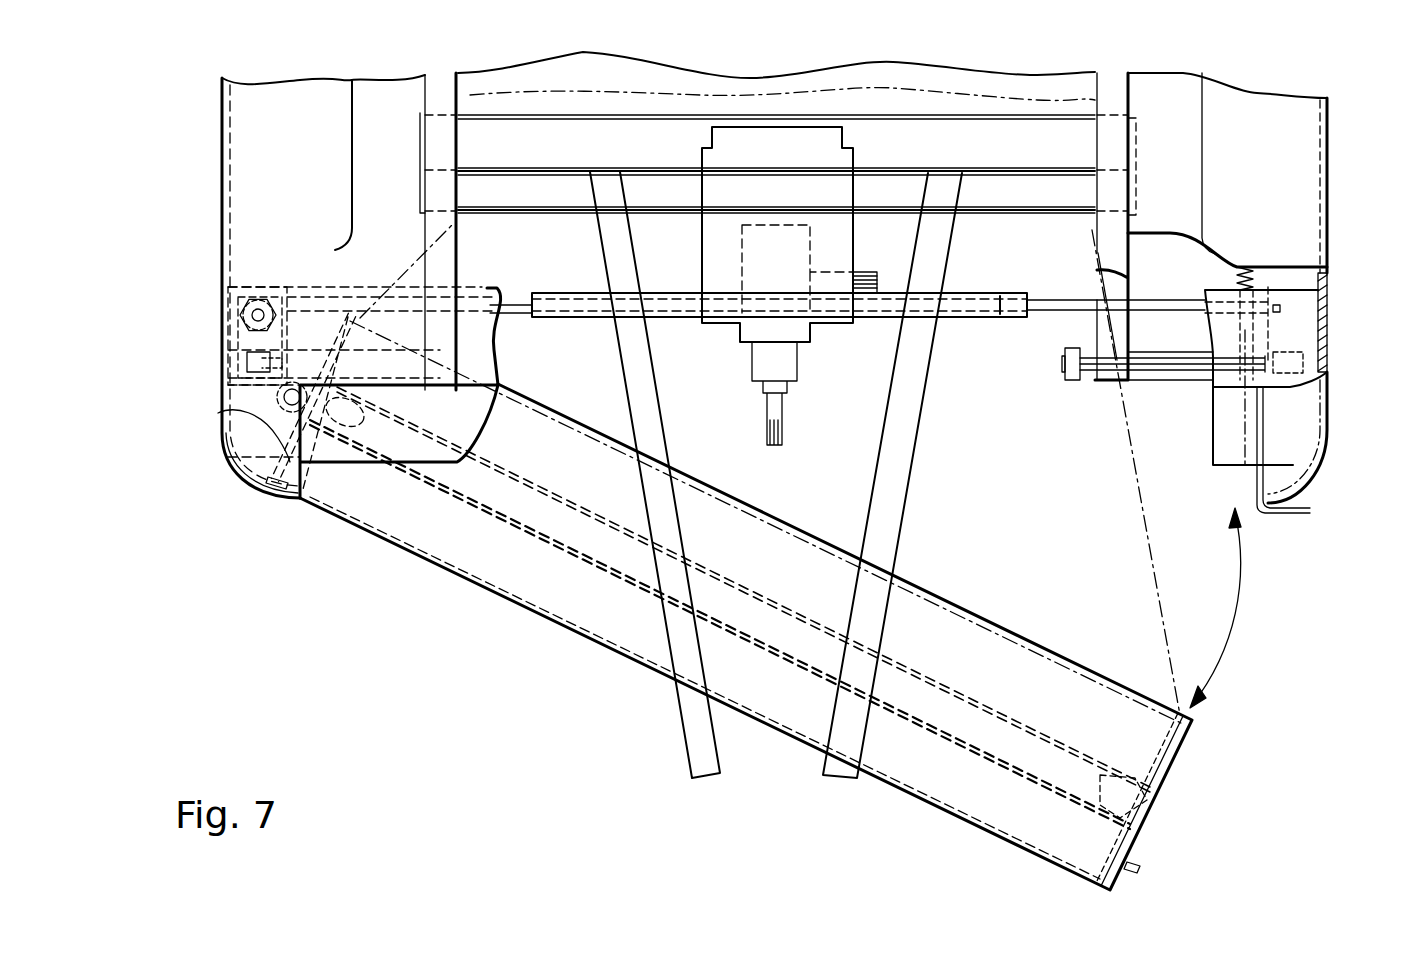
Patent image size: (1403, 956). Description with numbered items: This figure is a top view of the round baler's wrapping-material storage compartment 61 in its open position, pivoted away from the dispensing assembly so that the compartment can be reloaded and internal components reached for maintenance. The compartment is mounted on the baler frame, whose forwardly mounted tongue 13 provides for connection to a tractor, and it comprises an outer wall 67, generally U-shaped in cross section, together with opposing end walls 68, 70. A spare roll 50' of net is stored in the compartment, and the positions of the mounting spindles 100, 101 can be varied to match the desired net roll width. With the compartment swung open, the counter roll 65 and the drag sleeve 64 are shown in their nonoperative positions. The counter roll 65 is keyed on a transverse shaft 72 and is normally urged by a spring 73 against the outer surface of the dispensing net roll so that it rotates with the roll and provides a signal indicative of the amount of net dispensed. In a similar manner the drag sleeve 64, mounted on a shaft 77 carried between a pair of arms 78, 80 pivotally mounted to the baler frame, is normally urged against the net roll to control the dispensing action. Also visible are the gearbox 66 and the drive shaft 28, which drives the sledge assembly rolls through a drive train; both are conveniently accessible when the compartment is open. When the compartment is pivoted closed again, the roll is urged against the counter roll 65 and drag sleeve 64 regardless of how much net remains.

The gearbox 66 is at (778, 272).
The drive shaft 28 is at (783, 396).
The shaft 77 is at (510, 300).
The drag sleeve 64 is at (1002, 305).
The arm 78 is at (288, 328).
The end wall 68 is at (288, 433).
The mounting spindle 101 is at (328, 405).
The storage compartment 61 is at (571, 650).
The outer wall 67 is at (940, 812).
The end wall 70 is at (1165, 752).
The mounting spindle 100 is at (1122, 795).
The spare roll 50' is at (640, 475).
The tongue 13 is at (898, 508).
The spring 73 is at (1267, 268).
The arm 80 is at (1270, 327).
The counter roll 65 is at (1070, 378).
The transverse shaft 72 is at (1155, 362).